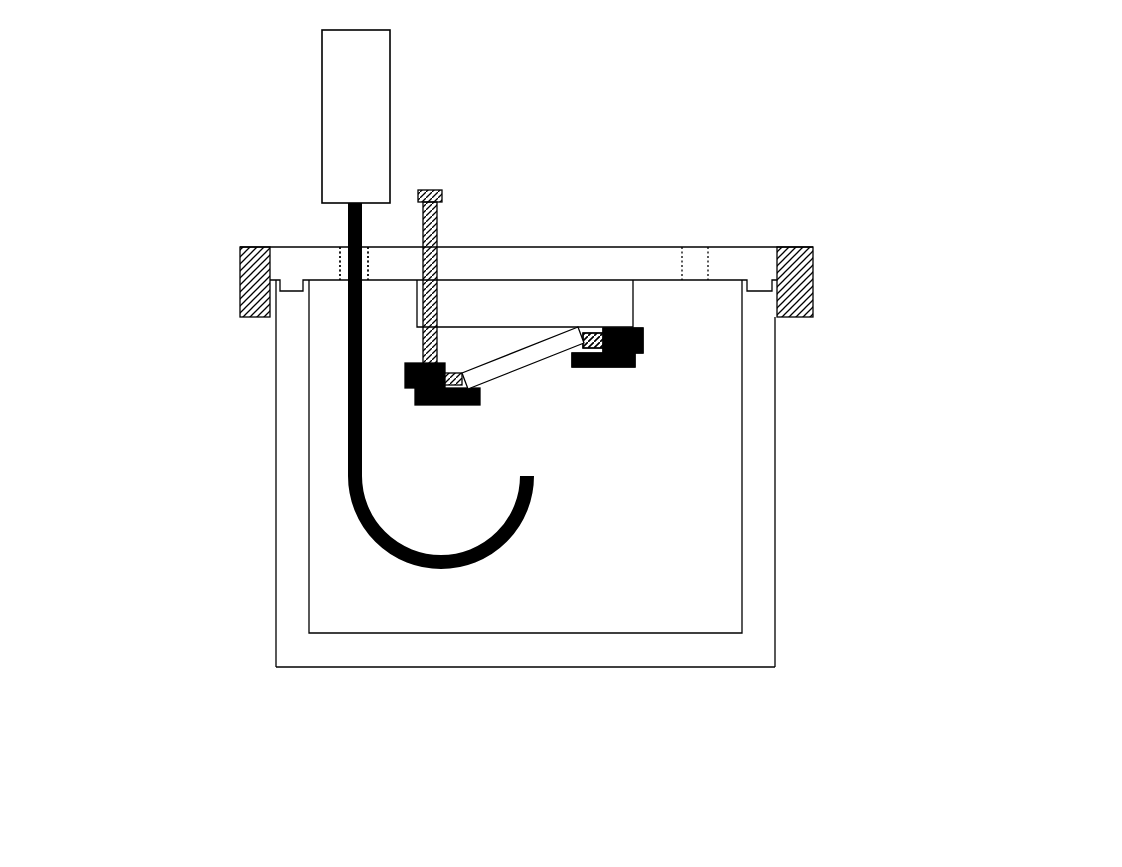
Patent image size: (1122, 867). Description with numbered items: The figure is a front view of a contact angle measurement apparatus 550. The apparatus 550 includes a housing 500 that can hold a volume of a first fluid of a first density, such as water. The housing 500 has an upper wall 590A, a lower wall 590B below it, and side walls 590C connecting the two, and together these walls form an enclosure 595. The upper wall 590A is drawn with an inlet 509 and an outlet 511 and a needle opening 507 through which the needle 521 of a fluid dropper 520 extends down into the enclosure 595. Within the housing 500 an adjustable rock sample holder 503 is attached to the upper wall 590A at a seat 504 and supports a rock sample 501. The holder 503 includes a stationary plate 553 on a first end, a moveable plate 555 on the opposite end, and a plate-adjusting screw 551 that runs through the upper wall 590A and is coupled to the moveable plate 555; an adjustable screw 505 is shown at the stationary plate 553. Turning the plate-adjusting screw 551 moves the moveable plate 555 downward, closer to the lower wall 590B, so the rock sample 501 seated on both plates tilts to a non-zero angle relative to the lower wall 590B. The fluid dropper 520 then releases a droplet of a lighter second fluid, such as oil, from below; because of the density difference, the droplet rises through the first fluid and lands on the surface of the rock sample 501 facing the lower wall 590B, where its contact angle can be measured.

The contact angle measurement apparatus 550 is at (772, 746).
The housing 500 is at (783, 640).
The upper wall 590A is at (543, 247).
The lower wall 590B is at (372, 667).
The side walls 590C is at (920, 418).
The enclosure 595 is at (357, 584).
The inlet 509 is at (697, 247).
The outlet 511 is at (829, 229).
The needle opening 507 is at (345, 248).
The fluid dropper 520 is at (356, 116).
The needle 521 is at (348, 350).
The seat 504 is at (497, 300).
The plate-adjusting screw 551 is at (432, 188).
The moveable plate 555 is at (432, 405).
The stationary plate 553 is at (577, 364).
The adjustable screw 505 is at (642, 340).
The rock sample holder 503 is at (627, 367).
The rock sample 501 is at (562, 335).